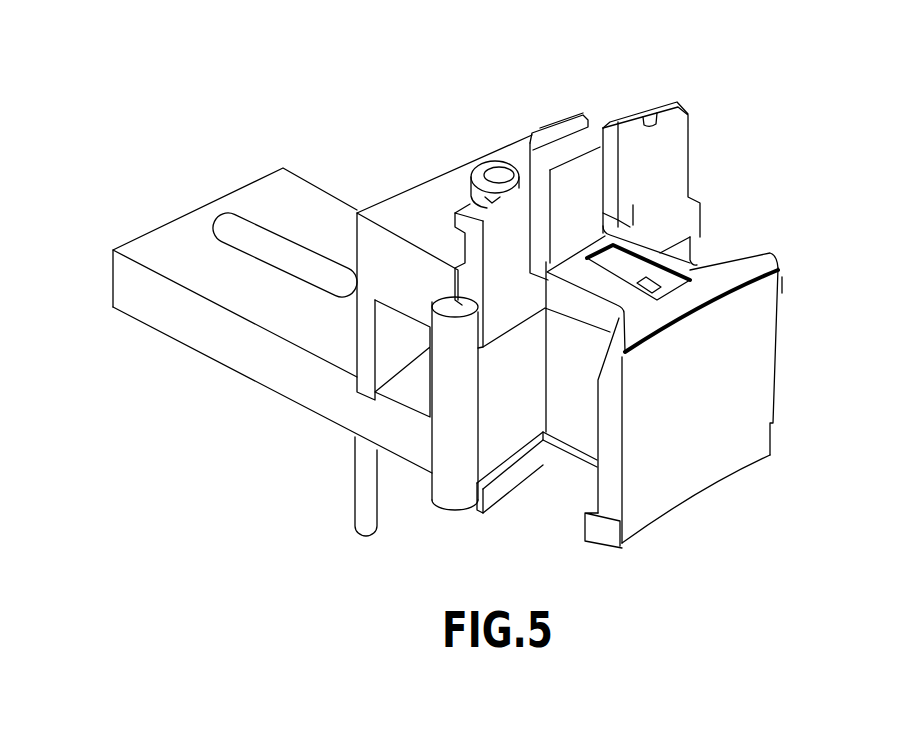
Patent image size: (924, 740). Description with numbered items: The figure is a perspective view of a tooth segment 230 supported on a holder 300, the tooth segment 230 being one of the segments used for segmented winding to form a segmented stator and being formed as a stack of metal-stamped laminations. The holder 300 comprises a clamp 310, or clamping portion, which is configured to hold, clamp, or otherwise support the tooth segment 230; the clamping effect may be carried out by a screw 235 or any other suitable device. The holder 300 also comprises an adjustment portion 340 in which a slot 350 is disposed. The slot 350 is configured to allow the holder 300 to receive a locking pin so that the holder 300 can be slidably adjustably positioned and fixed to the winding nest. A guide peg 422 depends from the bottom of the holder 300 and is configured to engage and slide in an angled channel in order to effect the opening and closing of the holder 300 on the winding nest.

The tooth segment 230 is at (743, 360).
The screw 235 is at (482, 180).
The holder 300 is at (336, 208).
The clamp 310 is at (423, 217).
The adjustment portion 340 is at (197, 207).
The slot 350 is at (274, 242).
The guide peg 422 is at (353, 487).